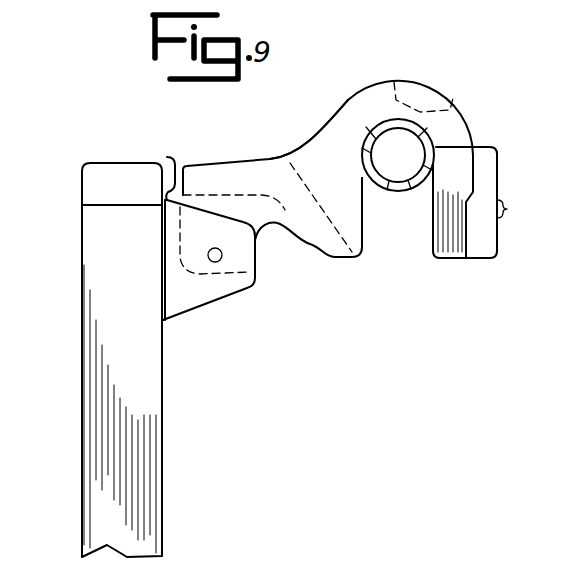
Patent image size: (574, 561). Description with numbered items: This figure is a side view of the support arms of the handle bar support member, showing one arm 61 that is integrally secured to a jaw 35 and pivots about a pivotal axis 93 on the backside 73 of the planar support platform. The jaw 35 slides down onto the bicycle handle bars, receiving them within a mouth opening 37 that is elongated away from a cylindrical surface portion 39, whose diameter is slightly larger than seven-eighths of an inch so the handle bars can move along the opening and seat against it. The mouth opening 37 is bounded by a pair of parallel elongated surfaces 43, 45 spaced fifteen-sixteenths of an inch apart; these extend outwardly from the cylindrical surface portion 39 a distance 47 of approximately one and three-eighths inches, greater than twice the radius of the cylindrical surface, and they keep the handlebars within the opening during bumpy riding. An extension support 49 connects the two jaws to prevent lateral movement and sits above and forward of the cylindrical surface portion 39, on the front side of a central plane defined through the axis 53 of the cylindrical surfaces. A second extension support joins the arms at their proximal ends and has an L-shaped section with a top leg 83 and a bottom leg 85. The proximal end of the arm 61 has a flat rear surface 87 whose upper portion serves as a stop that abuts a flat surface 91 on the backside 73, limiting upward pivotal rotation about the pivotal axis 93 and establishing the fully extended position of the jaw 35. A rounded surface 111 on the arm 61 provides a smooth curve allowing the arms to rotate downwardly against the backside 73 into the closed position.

The jaws 35 is at (455, 128).
The mouth opening 37 is at (397, 231).
The cylindrical surface portion 39 is at (382, 132).
The elongated surface 43 is at (362, 212).
The elongated surface 45 is at (432, 205).
The distance 47 is at (519, 212).
The extension support 49 is at (424, 91).
The axis 53 is at (396, 153).
The arm 61 is at (307, 162).
The backside 73 is at (162, 415).
The top leg 83 is at (222, 180).
The bottom leg 85 is at (303, 205).
The flat rear surface 87 is at (167, 157).
The flat surface 91 is at (88, 204).
The pivotal axis 93 is at (213, 262).
The rounded surface 111 is at (180, 278).